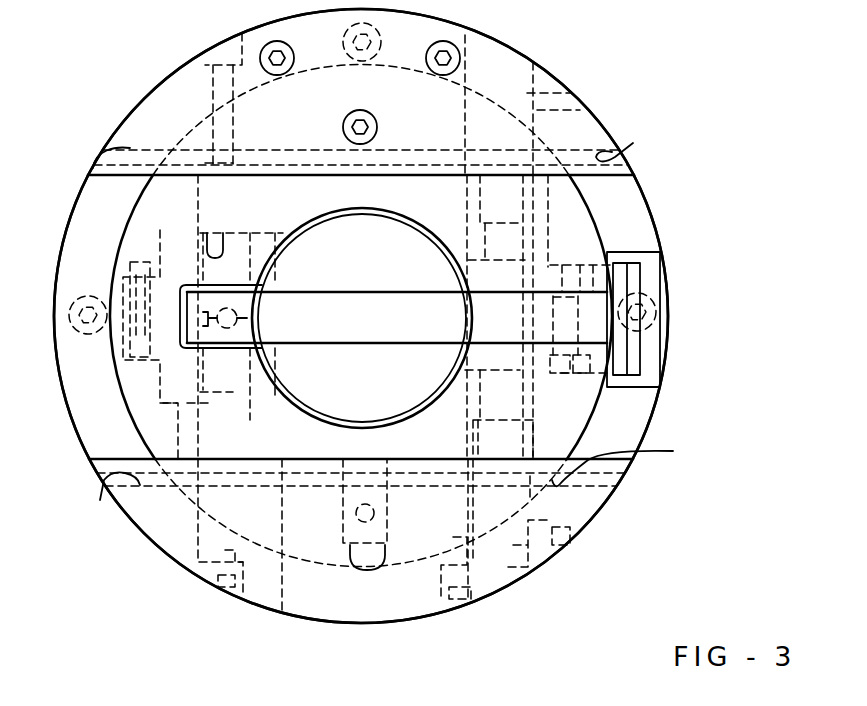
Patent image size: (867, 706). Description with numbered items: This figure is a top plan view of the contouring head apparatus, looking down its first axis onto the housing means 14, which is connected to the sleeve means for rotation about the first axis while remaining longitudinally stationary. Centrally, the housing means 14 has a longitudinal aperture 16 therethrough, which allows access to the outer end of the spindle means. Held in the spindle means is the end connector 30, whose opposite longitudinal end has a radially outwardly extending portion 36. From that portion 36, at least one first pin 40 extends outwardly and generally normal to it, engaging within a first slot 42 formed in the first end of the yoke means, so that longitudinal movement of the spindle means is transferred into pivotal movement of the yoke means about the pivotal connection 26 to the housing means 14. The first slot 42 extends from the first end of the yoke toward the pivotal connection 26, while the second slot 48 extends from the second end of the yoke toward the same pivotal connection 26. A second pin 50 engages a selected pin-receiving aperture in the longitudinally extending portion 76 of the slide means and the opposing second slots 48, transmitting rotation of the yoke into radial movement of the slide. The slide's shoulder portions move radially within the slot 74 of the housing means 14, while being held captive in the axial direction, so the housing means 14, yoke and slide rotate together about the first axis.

The housing means 14 is at (156, 84).
The longitudinal aperture 16 is at (406, 397).
The pivotal connection 26 is at (517, 50).
The end connector 30 is at (370, 246).
The radially outwardly extending portion 36 is at (225, 305).
The first pin 40 is at (223, 236).
The first slot 42 is at (214, 388).
The second slot 48 is at (530, 393).
The second pin 50 is at (522, 250).
The slot 74 is at (93, 166).
The longitudinally extending portion 76 is at (505, 290).